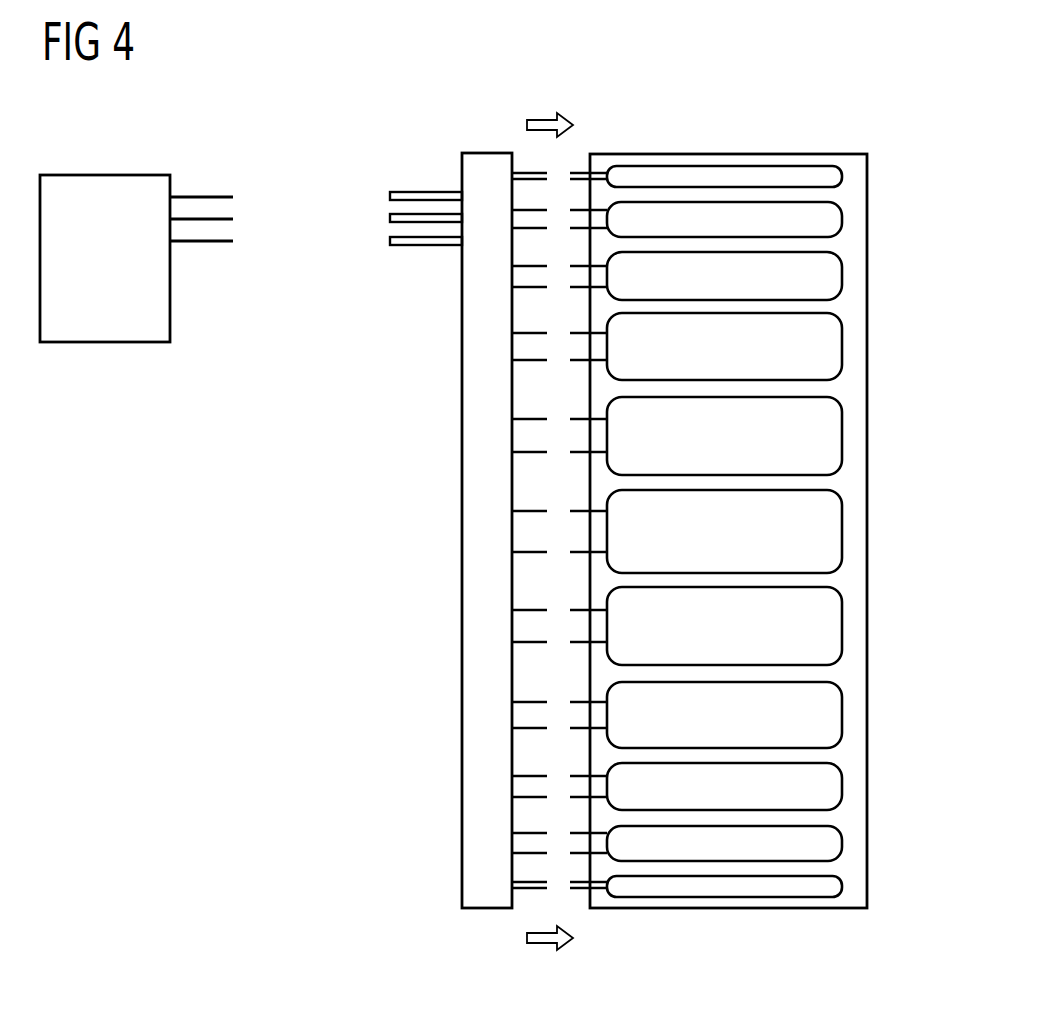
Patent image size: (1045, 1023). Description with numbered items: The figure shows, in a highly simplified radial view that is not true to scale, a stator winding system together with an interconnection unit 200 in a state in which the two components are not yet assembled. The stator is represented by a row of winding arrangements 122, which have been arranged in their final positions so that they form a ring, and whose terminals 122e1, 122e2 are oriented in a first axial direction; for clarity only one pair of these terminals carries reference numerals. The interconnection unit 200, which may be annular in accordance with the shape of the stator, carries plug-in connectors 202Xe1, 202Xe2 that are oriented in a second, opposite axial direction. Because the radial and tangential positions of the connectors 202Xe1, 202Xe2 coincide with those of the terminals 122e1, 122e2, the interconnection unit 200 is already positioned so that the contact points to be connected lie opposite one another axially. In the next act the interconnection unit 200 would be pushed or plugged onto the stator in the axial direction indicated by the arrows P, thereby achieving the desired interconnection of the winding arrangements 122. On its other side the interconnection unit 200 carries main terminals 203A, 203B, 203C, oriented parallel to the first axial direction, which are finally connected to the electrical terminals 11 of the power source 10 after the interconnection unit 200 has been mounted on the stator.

The power source 10 is at (103, 342).
The electrical terminals 11 is at (202, 260).
The interconnection unit 200 is at (472, 743).
The main terminal 203A is at (402, 192).
The main terminal 203B is at (402, 246).
The main terminal 203C is at (389, 219).
The terminal of the interconnection unit 202Xe1 is at (511, 419).
The terminal of the interconnection unit 202Xe2 is at (511, 452).
The winding arrangements 122 is at (841, 180).
The terminal of the winding arrangement 122e1 is at (608, 423).
The terminal of the winding arrangement 122e2 is at (608, 456).
The arrows P is at (541, 118).